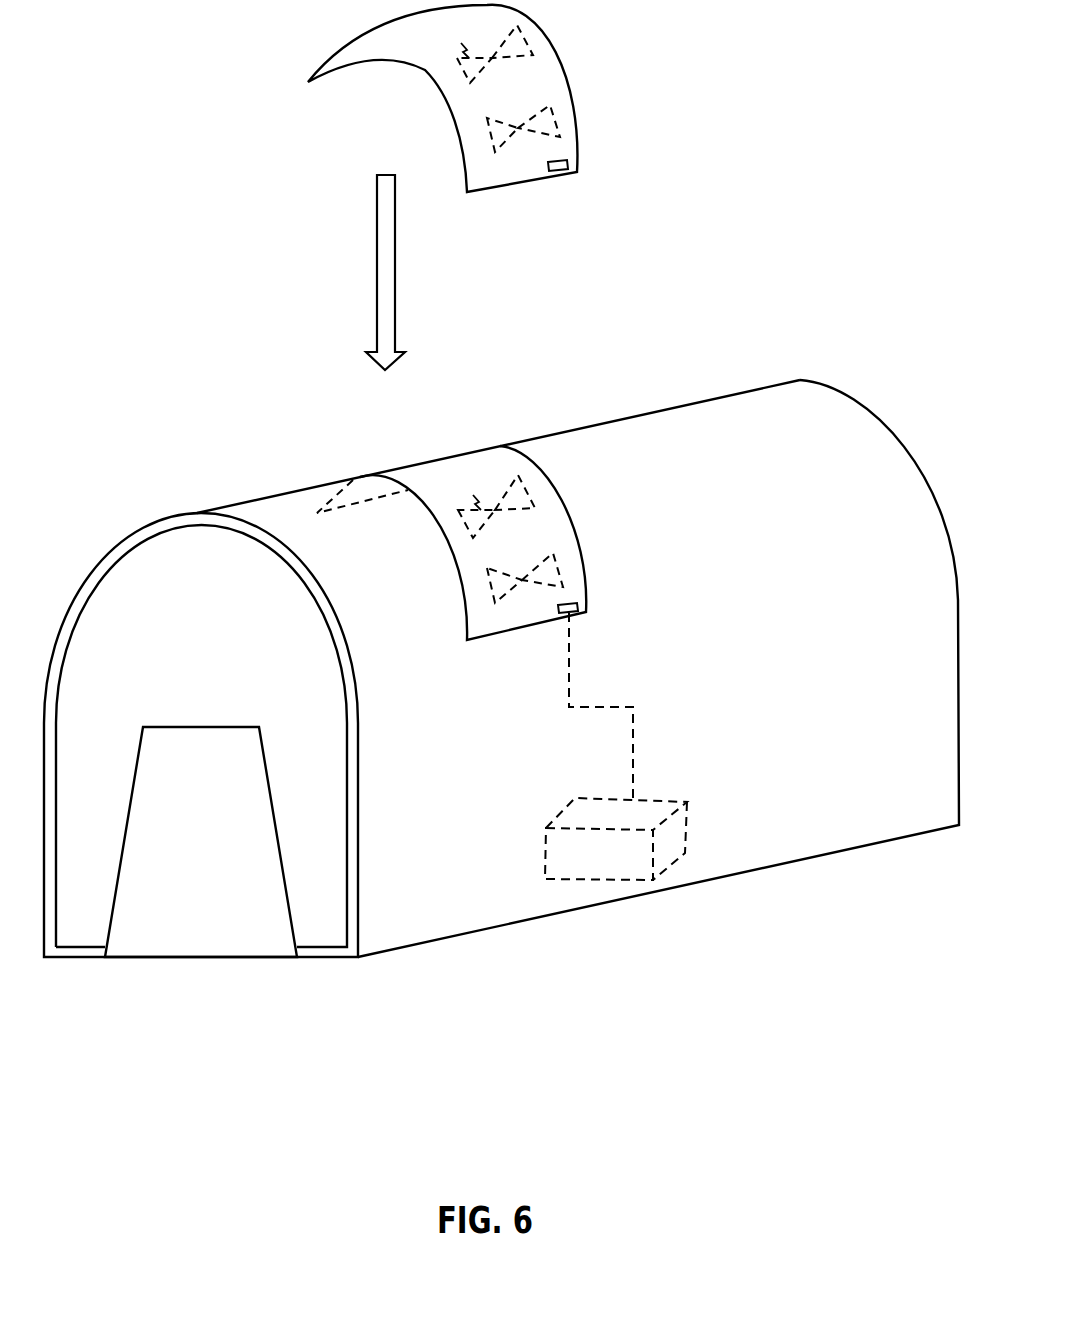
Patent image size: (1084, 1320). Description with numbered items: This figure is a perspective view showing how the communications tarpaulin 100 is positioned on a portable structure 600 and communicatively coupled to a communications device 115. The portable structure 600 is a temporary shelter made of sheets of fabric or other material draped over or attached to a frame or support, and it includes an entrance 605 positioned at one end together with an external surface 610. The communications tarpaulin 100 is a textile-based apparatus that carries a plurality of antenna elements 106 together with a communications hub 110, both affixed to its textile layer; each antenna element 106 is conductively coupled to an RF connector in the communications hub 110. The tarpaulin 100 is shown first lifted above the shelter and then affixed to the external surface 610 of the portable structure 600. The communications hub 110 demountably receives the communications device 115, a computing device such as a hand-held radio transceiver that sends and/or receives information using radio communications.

The communications tarpaulin 100 is at (573, 122).
The antenna elements 106 is at (503, 311).
The communications hub 110 is at (556, 172).
The communications device 115 is at (615, 869).
The portable structure 600 is at (447, 906).
The entrance 605 is at (195, 918).
The external surface 610 is at (735, 428).